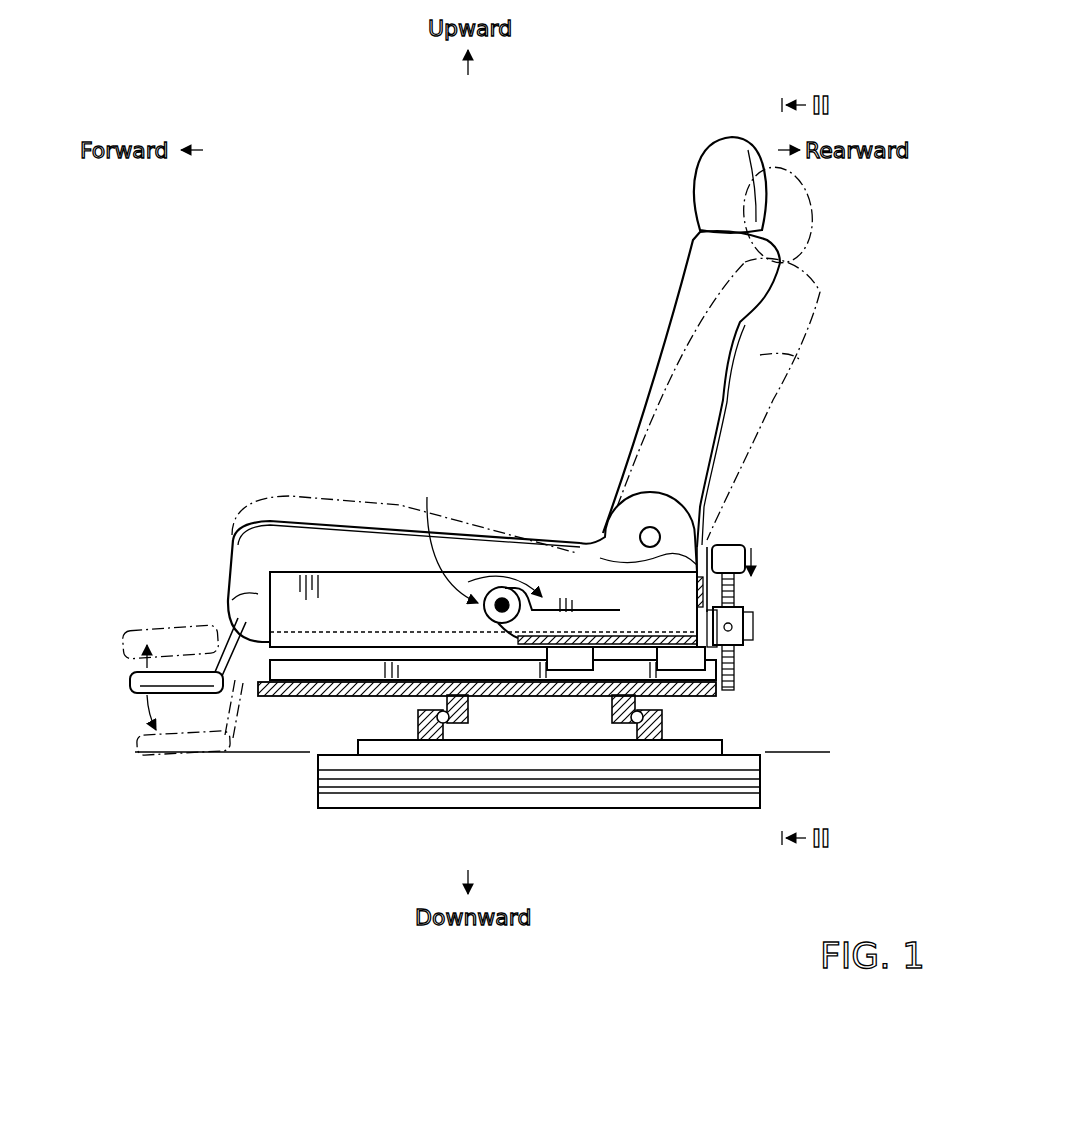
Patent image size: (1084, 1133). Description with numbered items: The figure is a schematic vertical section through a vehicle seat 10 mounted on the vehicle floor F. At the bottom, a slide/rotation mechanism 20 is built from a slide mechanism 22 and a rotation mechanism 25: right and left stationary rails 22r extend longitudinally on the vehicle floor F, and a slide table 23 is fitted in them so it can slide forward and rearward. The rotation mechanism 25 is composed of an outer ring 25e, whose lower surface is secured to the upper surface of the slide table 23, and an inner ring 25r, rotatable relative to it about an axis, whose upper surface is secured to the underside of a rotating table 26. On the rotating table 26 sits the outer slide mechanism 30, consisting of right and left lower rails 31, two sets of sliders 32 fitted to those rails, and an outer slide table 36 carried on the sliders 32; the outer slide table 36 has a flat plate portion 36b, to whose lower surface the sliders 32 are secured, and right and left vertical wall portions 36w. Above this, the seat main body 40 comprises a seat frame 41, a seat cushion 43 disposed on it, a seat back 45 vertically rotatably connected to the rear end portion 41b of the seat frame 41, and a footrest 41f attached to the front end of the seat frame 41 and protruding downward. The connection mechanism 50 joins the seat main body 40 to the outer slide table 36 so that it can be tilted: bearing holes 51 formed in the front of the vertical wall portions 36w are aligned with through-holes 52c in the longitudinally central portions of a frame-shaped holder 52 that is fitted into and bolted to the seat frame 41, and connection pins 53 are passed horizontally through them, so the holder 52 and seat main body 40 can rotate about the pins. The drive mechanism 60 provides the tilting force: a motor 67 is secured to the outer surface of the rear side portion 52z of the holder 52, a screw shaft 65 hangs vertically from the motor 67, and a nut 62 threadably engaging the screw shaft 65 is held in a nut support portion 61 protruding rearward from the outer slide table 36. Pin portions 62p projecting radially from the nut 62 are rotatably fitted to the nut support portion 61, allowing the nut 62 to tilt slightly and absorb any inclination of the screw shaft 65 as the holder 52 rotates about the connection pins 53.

The vehicle seat 10 is at (583, 367).
The slide/rotation mechanism 20 is at (732, 742).
The slide mechanism 22 is at (632, 812).
The stationary rails 22r is at (568, 792).
The slide table 23 is at (385, 747).
The rotation mechanism 25 is at (670, 722).
The outer ring 25e is at (416, 718).
The inner ring 25r is at (467, 700).
The rotating table 26 is at (291, 690).
The outer slide mechanism 30 is at (718, 686).
The lower rails 31 is at (335, 670).
The sliders 32 is at (678, 668).
The outer slide table 36 is at (584, 630).
The vertical wall portions 36w is at (603, 630).
The flat plate portion 36b is at (606, 640).
The seat main body 40 is at (547, 530).
The seat frame 41 is at (277, 500).
The rear end portion of the seat frame 41b is at (655, 520).
The footrest 41f is at (140, 635).
The seat cushion 43 is at (450, 563).
The seat back 45 is at (652, 372).
The connection mechanism 50 is at (476, 536).
The bearing holes 51 is at (488, 612).
The holder 52 is at (349, 620).
The through-holes 52c is at (383, 620).
The rear side portion of the holder 52z is at (704, 600).
The connection pins 53 is at (500, 588).
The drive mechanism 60 is at (779, 592).
The nut support portion 61 is at (752, 614).
The nut 62 is at (735, 641).
The pin portions 62p is at (732, 627).
The screw shaft 65 is at (735, 597).
The motor 67 is at (735, 547).
The vehicle floor F is at (250, 790).